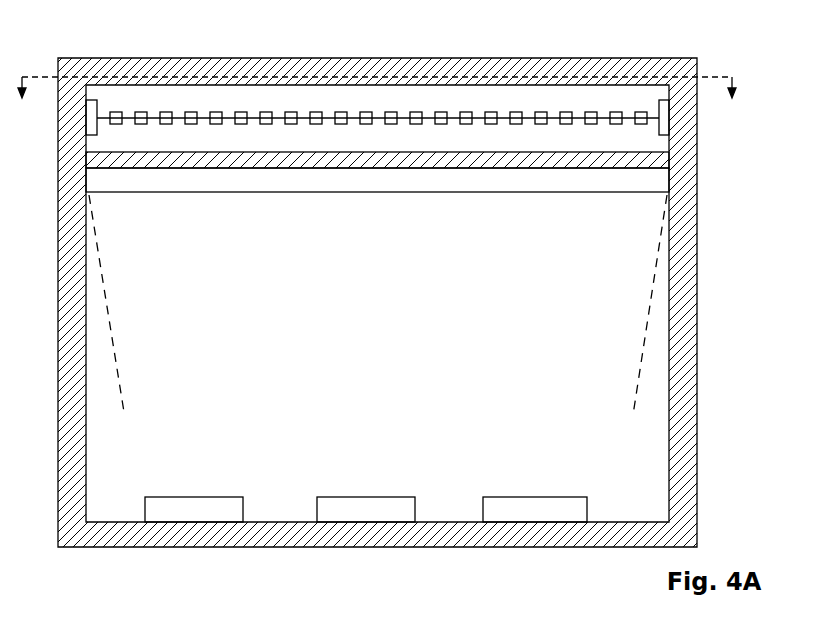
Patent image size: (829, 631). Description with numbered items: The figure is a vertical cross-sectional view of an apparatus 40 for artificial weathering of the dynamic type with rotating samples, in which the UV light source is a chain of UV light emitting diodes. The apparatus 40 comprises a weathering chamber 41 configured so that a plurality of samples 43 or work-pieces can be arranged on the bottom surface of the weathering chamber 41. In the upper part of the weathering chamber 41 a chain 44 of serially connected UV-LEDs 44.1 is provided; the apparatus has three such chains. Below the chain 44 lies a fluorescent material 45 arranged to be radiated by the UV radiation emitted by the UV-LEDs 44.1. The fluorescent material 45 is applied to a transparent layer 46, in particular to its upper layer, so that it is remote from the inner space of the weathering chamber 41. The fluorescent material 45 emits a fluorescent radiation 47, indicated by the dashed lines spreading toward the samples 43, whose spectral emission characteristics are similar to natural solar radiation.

The apparatus for artificial weathering 40 is at (86, 25).
The weathering chamber 41 is at (697, 250).
The samples 43 is at (500, 503).
The chain of serially connected UV-LEDs 44 is at (377, 186).
The UV-LED 44.1 is at (241, 125).
The fluorescent material 45 is at (352, 166).
The transparent layer 46 is at (550, 186).
The fluorescent radiation 47 is at (121, 388).